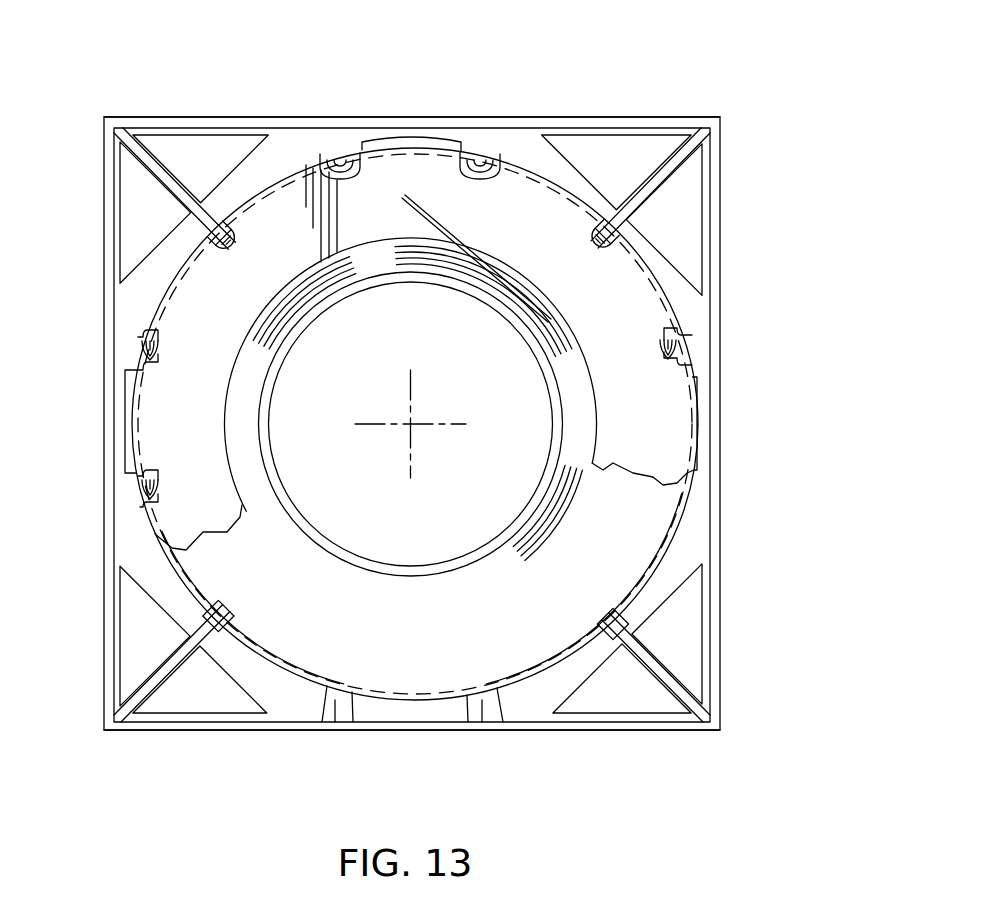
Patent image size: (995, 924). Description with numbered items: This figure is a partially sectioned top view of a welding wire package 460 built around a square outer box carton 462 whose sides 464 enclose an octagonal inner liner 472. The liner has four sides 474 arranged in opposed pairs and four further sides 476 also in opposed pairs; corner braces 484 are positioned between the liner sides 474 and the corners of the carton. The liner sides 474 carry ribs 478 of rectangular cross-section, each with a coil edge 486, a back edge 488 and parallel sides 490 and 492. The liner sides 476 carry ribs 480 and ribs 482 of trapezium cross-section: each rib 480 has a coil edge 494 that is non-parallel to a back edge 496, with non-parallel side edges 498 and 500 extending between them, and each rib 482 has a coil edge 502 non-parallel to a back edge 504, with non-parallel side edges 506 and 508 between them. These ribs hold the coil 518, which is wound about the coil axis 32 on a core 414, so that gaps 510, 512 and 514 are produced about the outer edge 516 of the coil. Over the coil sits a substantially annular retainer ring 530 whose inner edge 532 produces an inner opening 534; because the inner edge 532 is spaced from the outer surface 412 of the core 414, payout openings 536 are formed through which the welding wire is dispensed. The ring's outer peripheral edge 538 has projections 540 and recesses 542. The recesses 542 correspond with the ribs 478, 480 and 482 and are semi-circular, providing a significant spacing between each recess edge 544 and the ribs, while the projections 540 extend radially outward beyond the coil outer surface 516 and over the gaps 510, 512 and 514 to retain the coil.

The coil axis 32 is at (418, 418).
The outer surface of core 412 is at (246, 439).
The core 414 is at (317, 531).
The welding wire package 460 is at (676, 94).
The square outer box carton 462 is at (268, 116).
The sides 464 is at (372, 117).
The octagonal inner liner 472 is at (526, 729).
The sides 474 is at (250, 190).
The sides 476 is at (438, 135).
The ribs 478 is at (214, 232).
The ribs 480 is at (487, 138).
The ribs 482 is at (332, 135).
The corner braces 484 is at (178, 138).
The coil edge 486 is at (220, 248).
The back edge 488 is at (200, 225).
The side 490 is at (202, 605).
The side 492 is at (225, 632).
The coil edge 494 is at (465, 157).
The back edge 496 is at (495, 128).
The side edge 498 is at (510, 170).
The side edge 500 is at (458, 149).
The coil edge 502 is at (342, 175).
The back edge 504 is at (463, 730).
The side edge 506 is at (465, 695).
The side edge 508 is at (560, 648).
The gaps 510 is at (548, 168).
The gaps 512 is at (122, 372).
The gaps 514 is at (702, 300).
The outer edge of coil 516 is at (647, 283).
The coil 518 is at (566, 501).
The retainer ring 530 is at (297, 162).
The inner edge 532 is at (359, 250).
The inner opening 534 is at (302, 295).
The payout openings 536 is at (543, 307).
The outer peripheral edge 538 is at (690, 305).
The projections 540 is at (265, 178).
The recesses 542 is at (233, 243).
The recess edge 544 is at (480, 165).